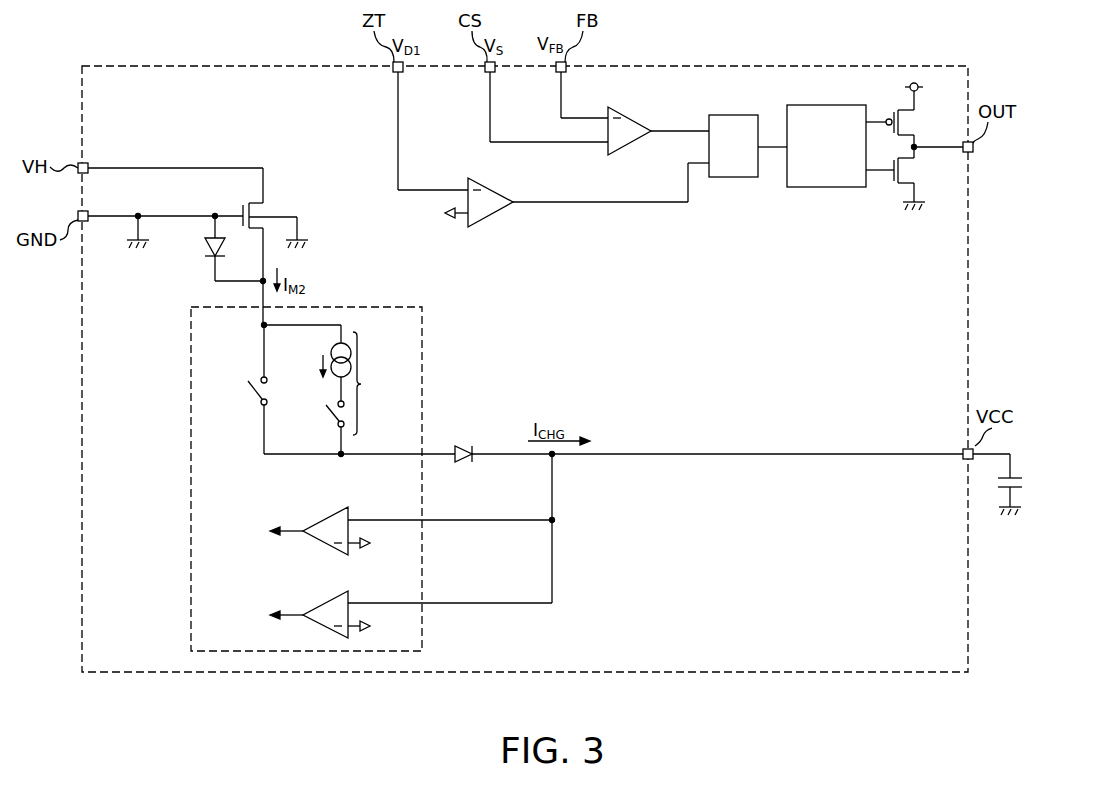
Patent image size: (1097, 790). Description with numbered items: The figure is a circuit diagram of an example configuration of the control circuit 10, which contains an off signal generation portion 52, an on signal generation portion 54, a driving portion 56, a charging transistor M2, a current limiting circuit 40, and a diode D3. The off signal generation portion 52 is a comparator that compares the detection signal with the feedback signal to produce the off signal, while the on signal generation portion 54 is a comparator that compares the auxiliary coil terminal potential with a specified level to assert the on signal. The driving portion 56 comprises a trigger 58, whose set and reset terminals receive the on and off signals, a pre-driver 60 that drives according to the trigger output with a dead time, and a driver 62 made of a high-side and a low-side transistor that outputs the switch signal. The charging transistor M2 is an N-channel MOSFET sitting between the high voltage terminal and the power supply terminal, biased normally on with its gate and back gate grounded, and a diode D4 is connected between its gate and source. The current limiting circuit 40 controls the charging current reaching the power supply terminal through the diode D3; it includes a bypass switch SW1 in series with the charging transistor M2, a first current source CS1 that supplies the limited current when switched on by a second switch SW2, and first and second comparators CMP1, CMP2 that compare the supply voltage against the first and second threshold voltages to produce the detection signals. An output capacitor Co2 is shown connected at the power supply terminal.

The control circuit 10 is at (310, 672).
The current limiting circuit 40 is at (403, 307).
The off signal generation portion 52 is at (636, 145).
The on signal generation portion 54 is at (494, 218).
The driving portion 56 is at (834, 182).
The trigger 58 is at (730, 114).
The pre-driver 60 is at (830, 187).
The driver 62 is at (914, 165).
The charging transistor M2 is at (267, 211).
The diode D4 is at (203, 247).
The diode D3 is at (464, 445).
The bypass switch SW1 is at (254, 396).
The switch SW2 is at (334, 419).
The first current source CS1 is at (340, 380).
The first comparator CMP1 is at (321, 522).
The second comparator CMP2 is at (321, 606).
The capacitor Co2 is at (1026, 482).